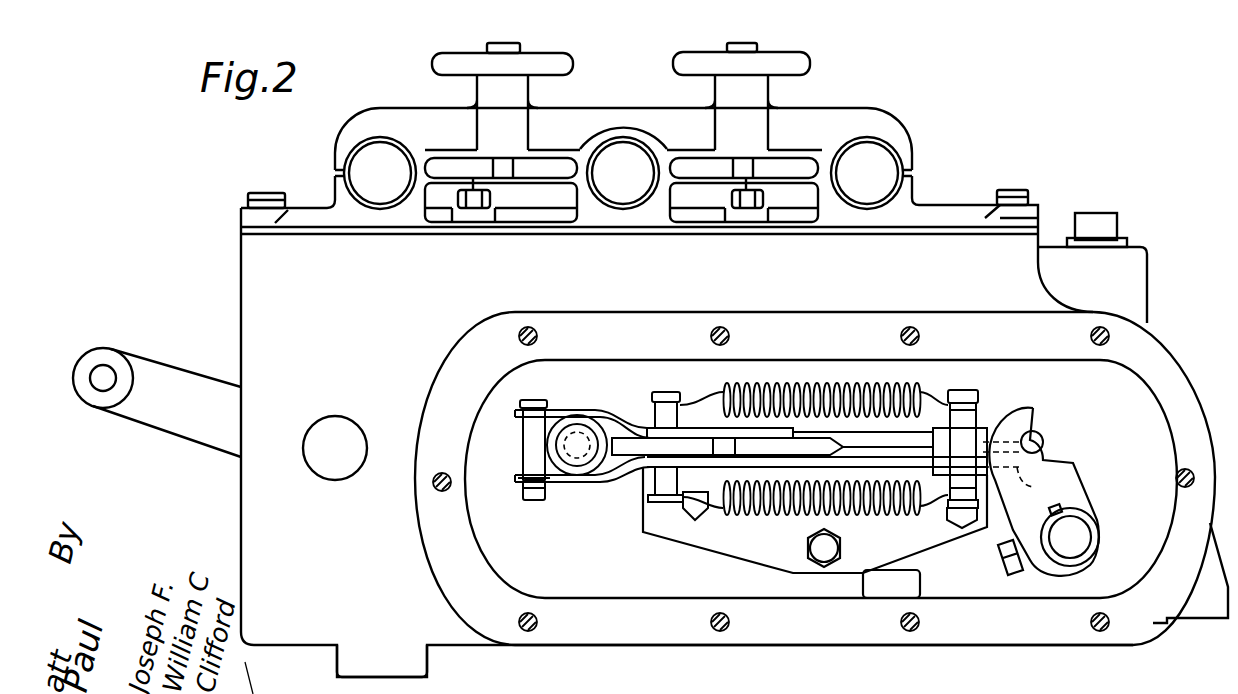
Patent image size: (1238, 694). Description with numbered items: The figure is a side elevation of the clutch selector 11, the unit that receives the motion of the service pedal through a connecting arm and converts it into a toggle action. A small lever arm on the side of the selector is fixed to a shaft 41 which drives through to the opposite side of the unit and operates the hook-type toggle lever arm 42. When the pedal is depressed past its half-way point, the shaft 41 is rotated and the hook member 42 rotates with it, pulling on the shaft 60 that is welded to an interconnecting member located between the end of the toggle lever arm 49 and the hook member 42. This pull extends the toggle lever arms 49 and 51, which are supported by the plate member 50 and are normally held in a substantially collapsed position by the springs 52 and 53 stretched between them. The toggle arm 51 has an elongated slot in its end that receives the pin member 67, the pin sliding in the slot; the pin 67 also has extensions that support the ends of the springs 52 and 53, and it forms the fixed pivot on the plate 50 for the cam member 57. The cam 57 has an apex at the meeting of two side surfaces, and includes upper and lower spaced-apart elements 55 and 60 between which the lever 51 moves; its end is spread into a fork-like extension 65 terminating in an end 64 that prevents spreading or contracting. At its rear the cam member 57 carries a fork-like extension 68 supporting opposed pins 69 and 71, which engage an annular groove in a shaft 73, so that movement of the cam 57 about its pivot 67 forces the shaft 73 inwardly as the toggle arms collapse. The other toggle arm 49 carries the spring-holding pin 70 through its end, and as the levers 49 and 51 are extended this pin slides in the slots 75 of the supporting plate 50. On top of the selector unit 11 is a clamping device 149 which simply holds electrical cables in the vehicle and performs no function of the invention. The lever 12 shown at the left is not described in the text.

The clutch selector 11 is at (948, 205).
The operating lever 12 is at (193, 387).
The clamping device 149 is at (838, 112).
The shaft 41 is at (1075, 530).
The hook-type toggle lever arm 42 is at (1034, 410).
The toggle lever arm 49 is at (870, 448).
The plate member 50 is at (900, 462).
The toggle lever arm 51 is at (697, 440).
The spring 52 is at (775, 516).
The spring 53 is at (877, 390).
The upper spaced-apart element 55 is at (680, 398).
The cam member 57 is at (647, 428).
The shaft 60 is at (1045, 440).
The end 64 is at (535, 501).
The fork-like extension 65 is at (557, 405).
The pin member 67 is at (657, 483).
The fork-like extension 68 is at (570, 478).
The pin 69 is at (575, 418).
The spring-holding pin 70 is at (980, 412).
The pin 71 is at (585, 472).
The shaft 73 is at (591, 430).
The slots 75 is at (1026, 486).